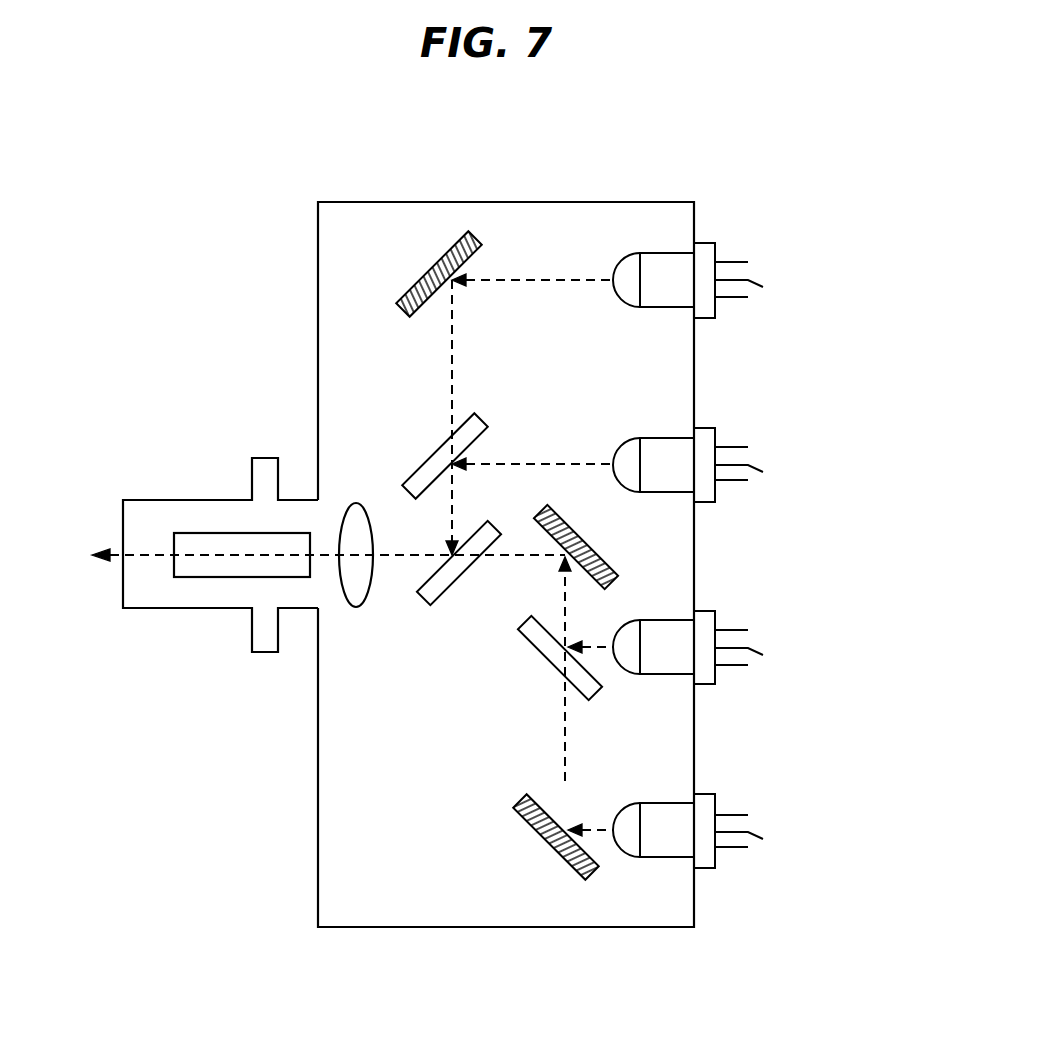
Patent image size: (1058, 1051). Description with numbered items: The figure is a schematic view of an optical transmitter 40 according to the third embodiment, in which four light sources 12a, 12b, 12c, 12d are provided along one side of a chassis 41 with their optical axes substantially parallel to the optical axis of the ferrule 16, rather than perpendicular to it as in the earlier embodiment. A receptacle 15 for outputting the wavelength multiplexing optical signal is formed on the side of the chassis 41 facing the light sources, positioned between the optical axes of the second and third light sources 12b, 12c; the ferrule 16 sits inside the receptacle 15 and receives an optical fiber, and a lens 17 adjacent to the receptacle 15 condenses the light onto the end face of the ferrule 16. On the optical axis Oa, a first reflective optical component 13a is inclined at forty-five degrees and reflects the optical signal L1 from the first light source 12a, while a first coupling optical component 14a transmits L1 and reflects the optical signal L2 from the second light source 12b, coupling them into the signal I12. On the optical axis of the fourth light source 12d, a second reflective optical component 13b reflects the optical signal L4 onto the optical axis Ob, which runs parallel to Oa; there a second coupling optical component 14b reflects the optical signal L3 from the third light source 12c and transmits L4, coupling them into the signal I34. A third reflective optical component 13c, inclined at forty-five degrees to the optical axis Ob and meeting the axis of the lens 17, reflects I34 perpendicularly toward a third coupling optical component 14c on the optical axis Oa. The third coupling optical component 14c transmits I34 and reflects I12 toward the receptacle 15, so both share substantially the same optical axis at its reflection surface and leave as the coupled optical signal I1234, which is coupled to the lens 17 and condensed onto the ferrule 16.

The optical transmitter 40 is at (704, 181).
The chassis 41 is at (360, 240).
The receptacle 15 is at (168, 490).
The ferrule 16 is at (232, 565).
The lens 17 is at (353, 588).
The first light source 12a is at (705, 307).
The second light source 12b is at (710, 488).
The third light source 12c is at (703, 675).
The fourth light source 12d is at (713, 860).
The first reflective optical component 13a is at (472, 242).
The second reflective optical component 13b is at (563, 860).
The third reflective optical component 13c is at (600, 552).
The first coupling optical component 14a is at (437, 447).
The second coupling optical component 14b is at (583, 688).
The third coupling optical component 14c is at (432, 597).
The optical axis Oa is at (442, 331).
The optical axis Ob is at (553, 753).
The optical signal L1 is at (497, 283).
The optical signal L2 is at (568, 463).
The optical signal L3 is at (600, 647).
The optical signal L4 is at (565, 783).
The coupled optical signal I12 is at (452, 517).
The coupled optical signal I34 is at (565, 585).
The coupled optical signal I1234 is at (413, 557).